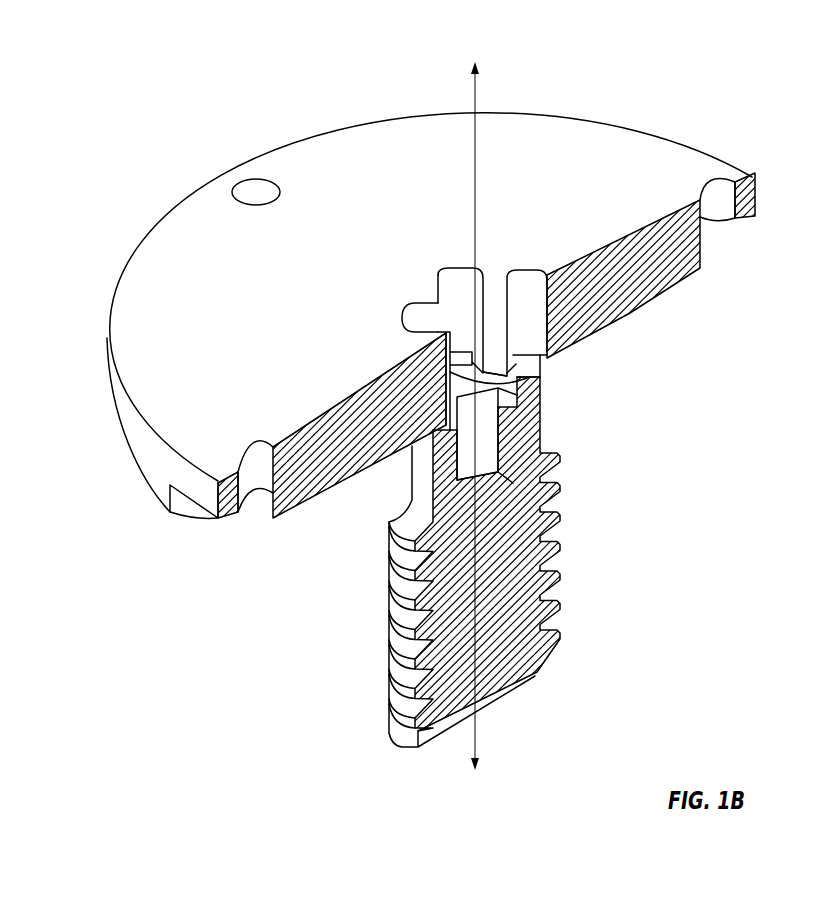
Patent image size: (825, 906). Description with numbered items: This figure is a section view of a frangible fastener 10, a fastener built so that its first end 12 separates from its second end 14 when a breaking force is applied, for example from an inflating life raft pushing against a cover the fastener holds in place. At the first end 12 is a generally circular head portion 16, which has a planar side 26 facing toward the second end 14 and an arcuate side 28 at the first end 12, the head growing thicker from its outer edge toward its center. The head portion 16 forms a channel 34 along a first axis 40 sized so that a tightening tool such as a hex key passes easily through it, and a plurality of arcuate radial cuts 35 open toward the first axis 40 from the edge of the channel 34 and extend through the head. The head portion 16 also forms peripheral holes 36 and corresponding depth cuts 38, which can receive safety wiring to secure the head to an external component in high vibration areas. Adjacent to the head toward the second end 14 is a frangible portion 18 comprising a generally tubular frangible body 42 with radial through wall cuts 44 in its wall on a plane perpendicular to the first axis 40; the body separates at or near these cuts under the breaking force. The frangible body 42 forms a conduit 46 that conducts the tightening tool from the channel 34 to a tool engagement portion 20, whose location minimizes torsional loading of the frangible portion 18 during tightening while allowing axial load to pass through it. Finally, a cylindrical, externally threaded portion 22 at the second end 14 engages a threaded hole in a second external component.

The frangible fastener 10 is at (412, 435).
The first end 12 is at (470, 54).
The second end 14 is at (481, 779).
The head portion 16 is at (431, 285).
The frangible portion 18 is at (570, 357).
The tool engagement portion 20 is at (487, 455).
The threaded portion 22 is at (389, 632).
The planar side 26 is at (668, 292).
The arcuate side 28 is at (556, 113).
The channel 34 is at (494, 302).
The arcuate radial cuts 35 is at (448, 268).
The peripheral holes 36 is at (276, 192).
The depth cuts 38 is at (209, 549).
The first axis 40 is at (475, 417).
The frangible body 42 is at (520, 366).
The through wall cuts 44 is at (457, 359).
The conduit 46 is at (496, 362).